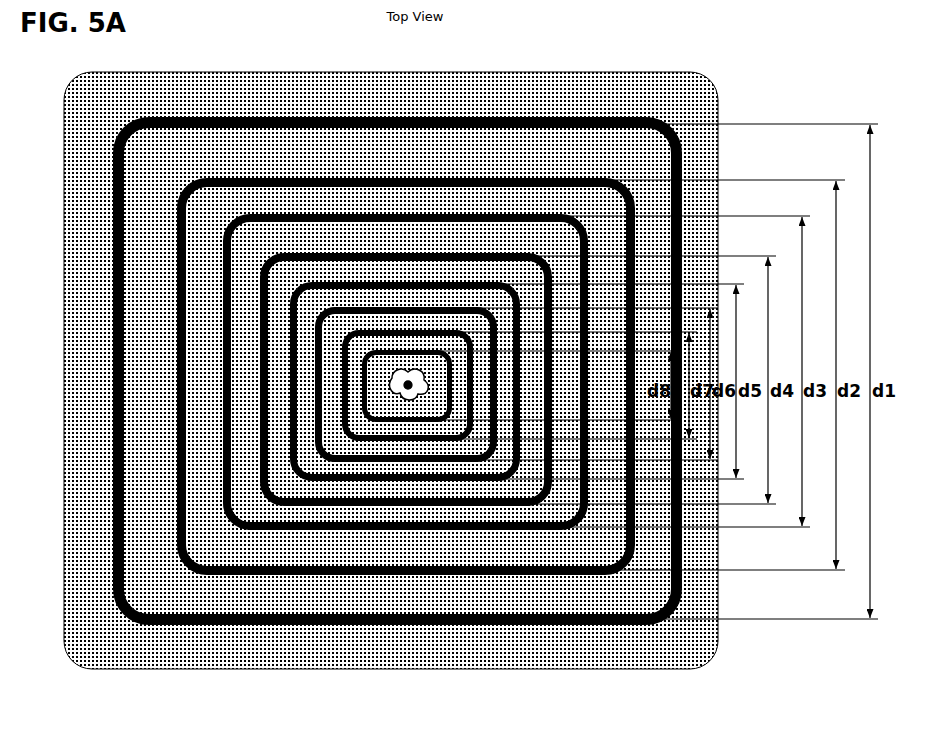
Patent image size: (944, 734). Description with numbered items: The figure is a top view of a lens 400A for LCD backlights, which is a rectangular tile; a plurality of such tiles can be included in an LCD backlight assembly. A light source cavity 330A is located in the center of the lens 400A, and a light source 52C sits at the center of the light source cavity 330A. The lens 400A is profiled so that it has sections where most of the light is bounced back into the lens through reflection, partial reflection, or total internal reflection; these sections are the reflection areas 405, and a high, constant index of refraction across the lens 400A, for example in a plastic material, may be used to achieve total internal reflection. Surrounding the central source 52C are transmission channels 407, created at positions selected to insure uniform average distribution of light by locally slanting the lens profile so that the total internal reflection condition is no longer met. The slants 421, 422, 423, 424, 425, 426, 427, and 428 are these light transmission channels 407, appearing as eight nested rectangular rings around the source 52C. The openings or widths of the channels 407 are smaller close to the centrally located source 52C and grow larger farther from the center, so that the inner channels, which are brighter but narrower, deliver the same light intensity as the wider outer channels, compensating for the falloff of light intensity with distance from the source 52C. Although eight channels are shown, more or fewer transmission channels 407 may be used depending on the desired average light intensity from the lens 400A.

The lens 400A is at (279, 24).
The light source cavity 330A is at (397, 378).
The light source 52C is at (408, 385).
The reflection areas 405 is at (247, 455).
The transmission channels 407 is at (182, 562).
The slant 421 is at (162, 622).
The slant 422 is at (226, 573).
The slant 423 is at (266, 528).
The slant 424 is at (299, 504).
The slant 425 is at (329, 479).
The slant 426 is at (349, 460).
The slant 427 is at (370, 439).
The slant 428 is at (393, 420).